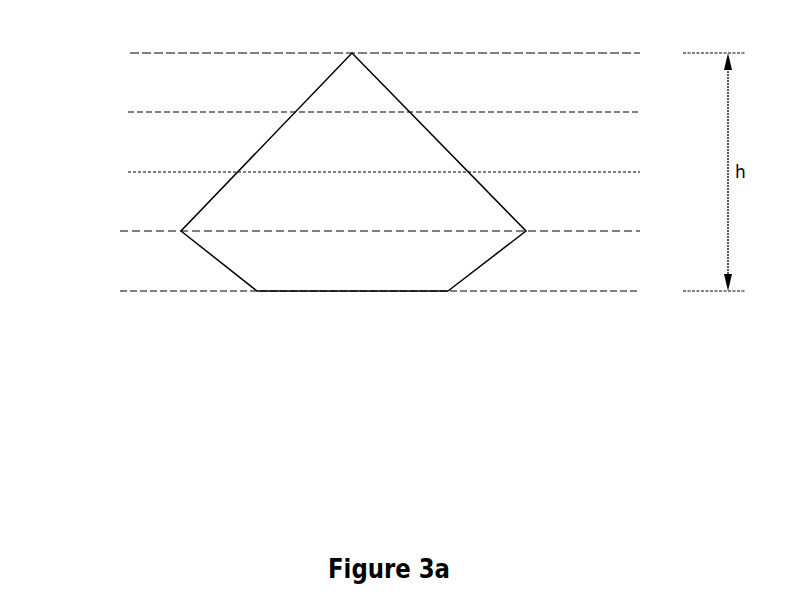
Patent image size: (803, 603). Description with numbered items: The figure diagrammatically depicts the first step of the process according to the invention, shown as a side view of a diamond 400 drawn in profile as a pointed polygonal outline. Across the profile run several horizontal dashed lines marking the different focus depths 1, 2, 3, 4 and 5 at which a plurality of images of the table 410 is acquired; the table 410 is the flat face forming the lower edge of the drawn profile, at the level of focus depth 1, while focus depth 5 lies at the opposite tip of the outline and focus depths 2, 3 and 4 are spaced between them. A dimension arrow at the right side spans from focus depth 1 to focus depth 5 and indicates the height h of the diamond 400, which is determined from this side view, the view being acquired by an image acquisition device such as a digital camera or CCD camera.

The diamond 400 is at (213, 216).
The table 410 is at (434, 296).
The focus depth 1 is at (390, 291).
The focus depth 2 is at (390, 231).
The focus depth 3 is at (394, 172).
The focus depth 4 is at (394, 112).
The focus depth 5 is at (395, 53).